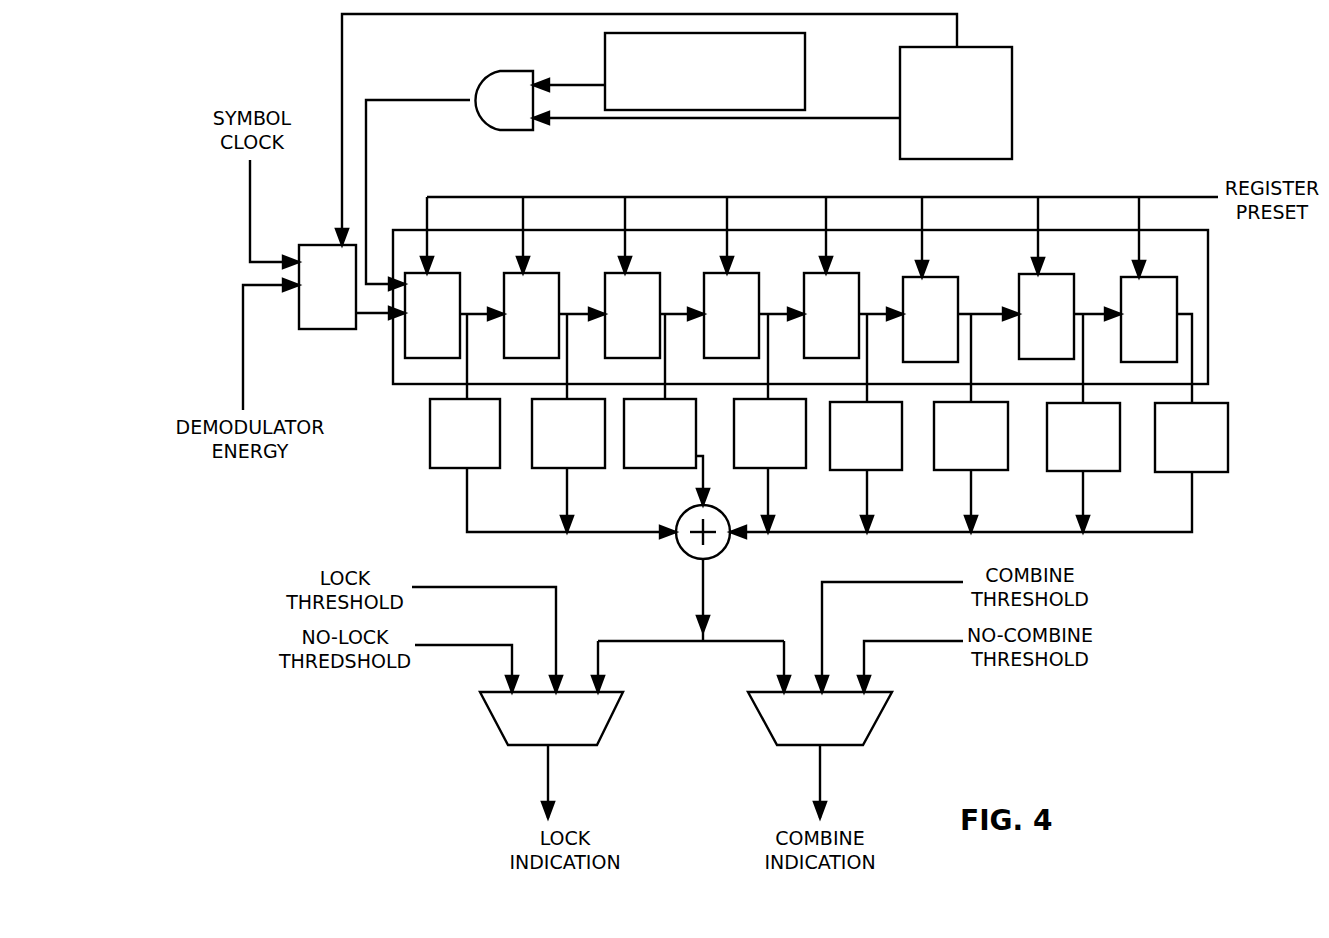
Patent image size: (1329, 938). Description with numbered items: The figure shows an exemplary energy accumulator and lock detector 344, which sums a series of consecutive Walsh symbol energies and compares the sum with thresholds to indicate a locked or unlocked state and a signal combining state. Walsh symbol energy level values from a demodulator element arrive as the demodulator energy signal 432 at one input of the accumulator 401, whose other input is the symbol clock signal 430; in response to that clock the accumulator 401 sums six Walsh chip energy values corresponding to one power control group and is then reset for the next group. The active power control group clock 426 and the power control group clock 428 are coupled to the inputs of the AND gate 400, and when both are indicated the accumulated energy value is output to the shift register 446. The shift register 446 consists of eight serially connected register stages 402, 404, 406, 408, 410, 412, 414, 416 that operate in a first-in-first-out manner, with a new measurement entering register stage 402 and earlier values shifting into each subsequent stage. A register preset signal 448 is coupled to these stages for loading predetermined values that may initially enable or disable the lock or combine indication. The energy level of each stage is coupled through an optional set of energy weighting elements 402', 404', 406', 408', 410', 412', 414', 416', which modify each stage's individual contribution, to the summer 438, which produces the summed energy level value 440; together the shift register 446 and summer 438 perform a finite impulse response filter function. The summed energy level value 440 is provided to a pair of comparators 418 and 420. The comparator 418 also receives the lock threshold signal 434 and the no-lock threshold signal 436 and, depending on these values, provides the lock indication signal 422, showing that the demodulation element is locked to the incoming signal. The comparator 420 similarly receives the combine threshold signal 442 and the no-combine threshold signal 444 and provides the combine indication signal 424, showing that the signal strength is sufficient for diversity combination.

The energy accumulator and lock detector 344 is at (160, 239).
The AND gate 400 is at (484, 72).
The accumulator 401 is at (308, 245).
The register stage 402 is at (449, 298).
The register stage 404 is at (549, 298).
The register stage 406 is at (650, 298).
The register stage 408 is at (749, 298).
The register stage 410 is at (849, 298).
The register stage 412 is at (950, 300).
The register stage 414 is at (1064, 299).
The register stage 416 is at (1165, 300).
The energy weighting element 402' is at (539, 468).
The energy weighting element 404' is at (550, 465).
The energy weighting element 406' is at (659, 456).
The energy weighting element 408' is at (765, 465).
The energy weighting element 410' is at (853, 467).
The energy weighting element 412' is at (959, 467).
The energy weighting element 414' is at (1070, 467).
The energy weighting element 416' is at (979, 470).
The comparator 418 is at (493, 718).
The comparator 420 is at (762, 718).
The lock indication signal 422 is at (548, 778).
The combine indication signal 424 is at (820, 778).
The active power control group clock 426 is at (806, 96).
The power control group clock 428 is at (955, 159).
The symbol clock signal 430 is at (250, 200).
The demodulator energy signal 432 is at (243, 388).
The lock threshold signal 434 is at (474, 587).
The no-lock threshold signal 436 is at (430, 645).
The summer 438 is at (684, 552).
The summed energy level value 440 is at (703, 598).
The combine threshold signal 442 is at (838, 582).
The no-combine threshold signal 444 is at (880, 641).
The shift register 446 is at (393, 384).
The register preset signal 448 is at (1108, 197).